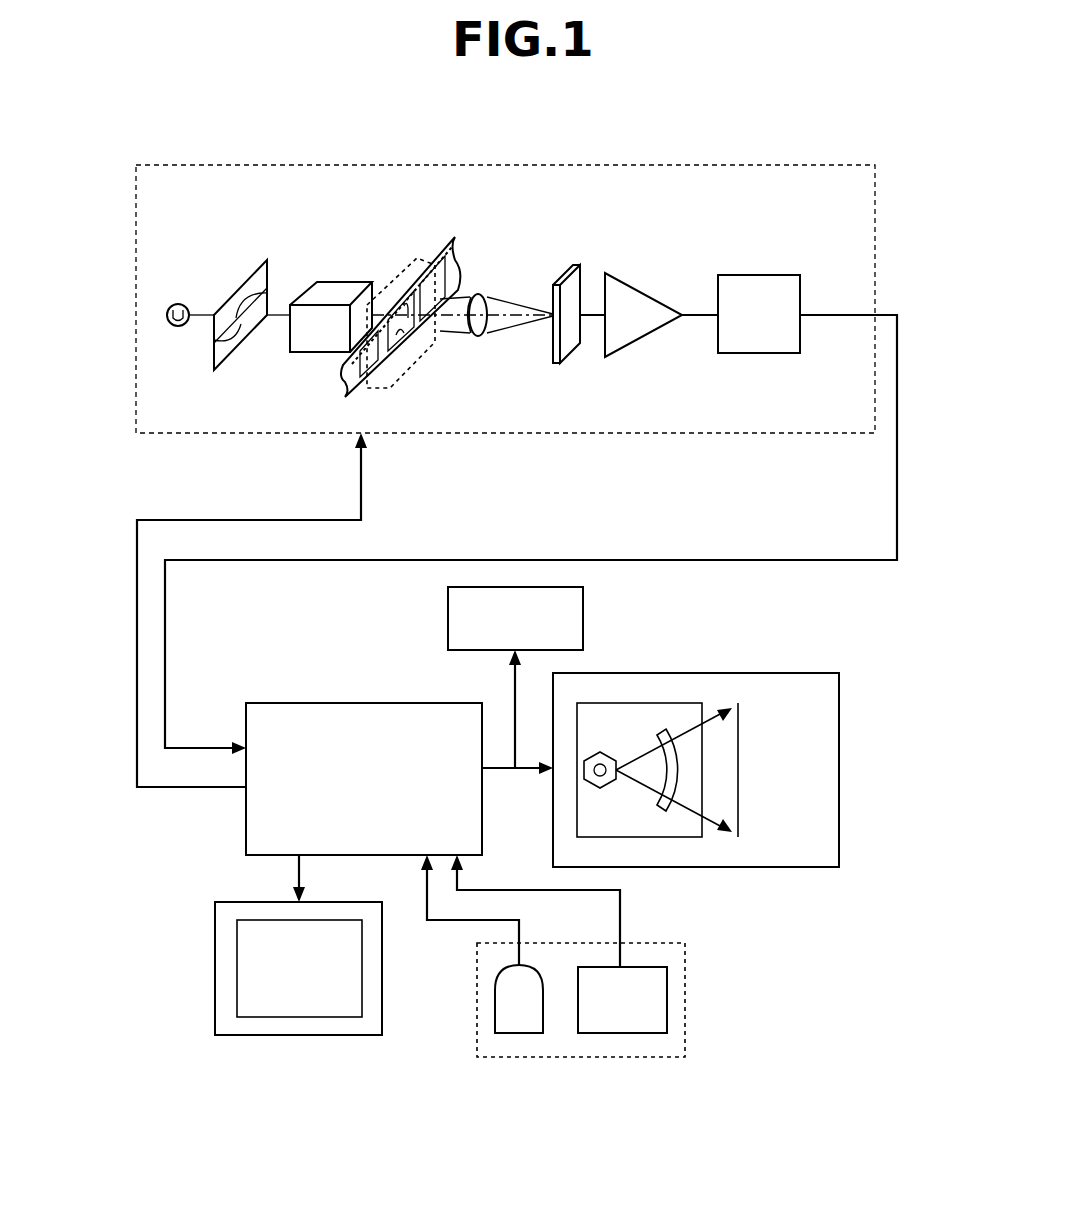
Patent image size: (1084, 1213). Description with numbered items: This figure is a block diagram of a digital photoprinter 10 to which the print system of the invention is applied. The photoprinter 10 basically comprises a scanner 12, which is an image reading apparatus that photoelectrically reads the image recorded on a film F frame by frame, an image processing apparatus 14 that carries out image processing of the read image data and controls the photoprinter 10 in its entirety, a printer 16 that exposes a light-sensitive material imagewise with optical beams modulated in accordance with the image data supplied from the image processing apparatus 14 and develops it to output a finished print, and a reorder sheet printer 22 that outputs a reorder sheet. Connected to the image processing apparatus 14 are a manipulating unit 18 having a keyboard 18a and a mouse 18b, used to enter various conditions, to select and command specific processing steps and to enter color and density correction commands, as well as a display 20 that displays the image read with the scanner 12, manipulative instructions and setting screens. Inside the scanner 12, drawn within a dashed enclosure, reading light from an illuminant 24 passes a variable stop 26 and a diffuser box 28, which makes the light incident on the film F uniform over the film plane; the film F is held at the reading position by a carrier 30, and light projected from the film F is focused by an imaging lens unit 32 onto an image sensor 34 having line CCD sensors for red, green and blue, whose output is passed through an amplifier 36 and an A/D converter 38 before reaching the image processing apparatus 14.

The digital photoprinter 10 is at (760, 136).
The scanner 12 is at (340, 165).
The image processing apparatus 14 is at (362, 703).
The printer 16 is at (778, 673).
The manipulating unit 18 is at (579, 1046).
The keyboard 18a is at (625, 1033).
The mouse 18b is at (512, 1033).
The display 20 is at (290, 1035).
The reorder sheet printer 22 is at (583, 618).
The illuminant 24 is at (175, 304).
The variable stop 26 is at (245, 295).
The diffuser box 28 is at (328, 303).
The carrier 30 is at (417, 350).
The imaging lens unit 32 is at (478, 294).
The image sensor 34 is at (573, 288).
The amplifier 36 is at (645, 345).
The A/D converter 38 is at (763, 353).
The film F is at (445, 252).